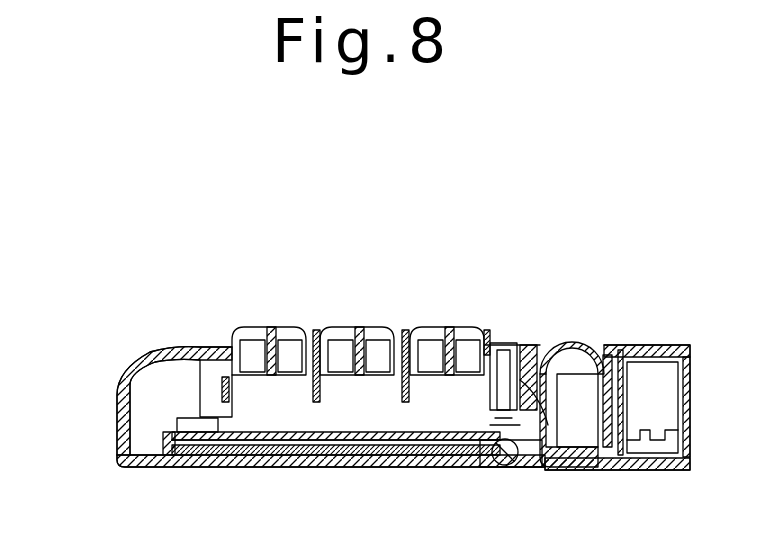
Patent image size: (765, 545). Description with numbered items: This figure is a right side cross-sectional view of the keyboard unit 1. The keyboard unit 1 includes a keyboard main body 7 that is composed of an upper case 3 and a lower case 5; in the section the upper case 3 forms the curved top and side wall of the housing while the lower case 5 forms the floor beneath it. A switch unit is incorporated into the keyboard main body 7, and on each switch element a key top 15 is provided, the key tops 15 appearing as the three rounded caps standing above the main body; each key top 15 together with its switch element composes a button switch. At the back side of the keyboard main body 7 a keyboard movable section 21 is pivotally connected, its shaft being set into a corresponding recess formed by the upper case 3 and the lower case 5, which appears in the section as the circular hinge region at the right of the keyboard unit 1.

The keyboard unit 1 is at (406, 268).
The upper case 3 is at (117, 382).
The lower case 5 is at (130, 452).
The keyboard main body 7 is at (70, 370).
The key top 15 is at (443, 325).
The keyboard movable section 21 is at (637, 350).